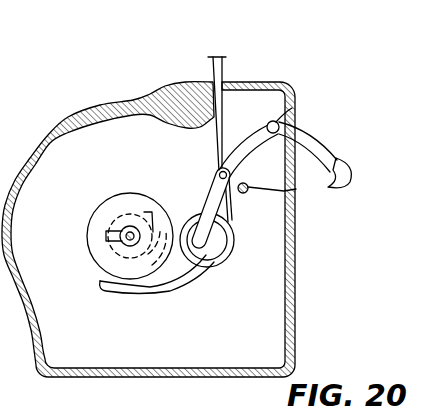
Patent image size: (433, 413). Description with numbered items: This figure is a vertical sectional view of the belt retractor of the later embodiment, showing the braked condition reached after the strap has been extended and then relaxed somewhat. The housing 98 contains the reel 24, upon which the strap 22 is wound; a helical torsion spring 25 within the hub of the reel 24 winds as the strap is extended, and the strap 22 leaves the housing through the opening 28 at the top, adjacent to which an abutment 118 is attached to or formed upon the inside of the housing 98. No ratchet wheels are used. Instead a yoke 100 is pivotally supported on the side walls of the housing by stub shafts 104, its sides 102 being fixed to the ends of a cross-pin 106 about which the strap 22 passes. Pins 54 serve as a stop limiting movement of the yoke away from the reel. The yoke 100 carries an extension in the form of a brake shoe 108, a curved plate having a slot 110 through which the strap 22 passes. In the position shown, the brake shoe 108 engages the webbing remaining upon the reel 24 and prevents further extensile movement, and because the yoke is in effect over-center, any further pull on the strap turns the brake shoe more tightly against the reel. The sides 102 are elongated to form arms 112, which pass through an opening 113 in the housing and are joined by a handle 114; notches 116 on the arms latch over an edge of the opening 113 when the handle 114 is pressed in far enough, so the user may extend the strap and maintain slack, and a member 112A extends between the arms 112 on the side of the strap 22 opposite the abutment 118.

The strap 22 is at (225, 62).
The reel 24 is at (98, 230).
The helical torsion spring 25 is at (112, 245).
The opening 28 is at (205, 82).
The pins 54 is at (280, 186).
The housing 98 is at (58, 127).
The yoke 100 is at (203, 200).
The sides 102 is at (227, 195).
The stub shafts 104 is at (218, 173).
The cross-pin 106 is at (218, 236).
The brake shoe 108 is at (177, 281).
The slot 110 is at (192, 272).
The arms 112 is at (236, 146).
The member 112A is at (296, 105).
The opening 113 is at (280, 125).
The handle 114 is at (349, 180).
The notches 116 is at (337, 162).
The abutment 118 is at (162, 97).